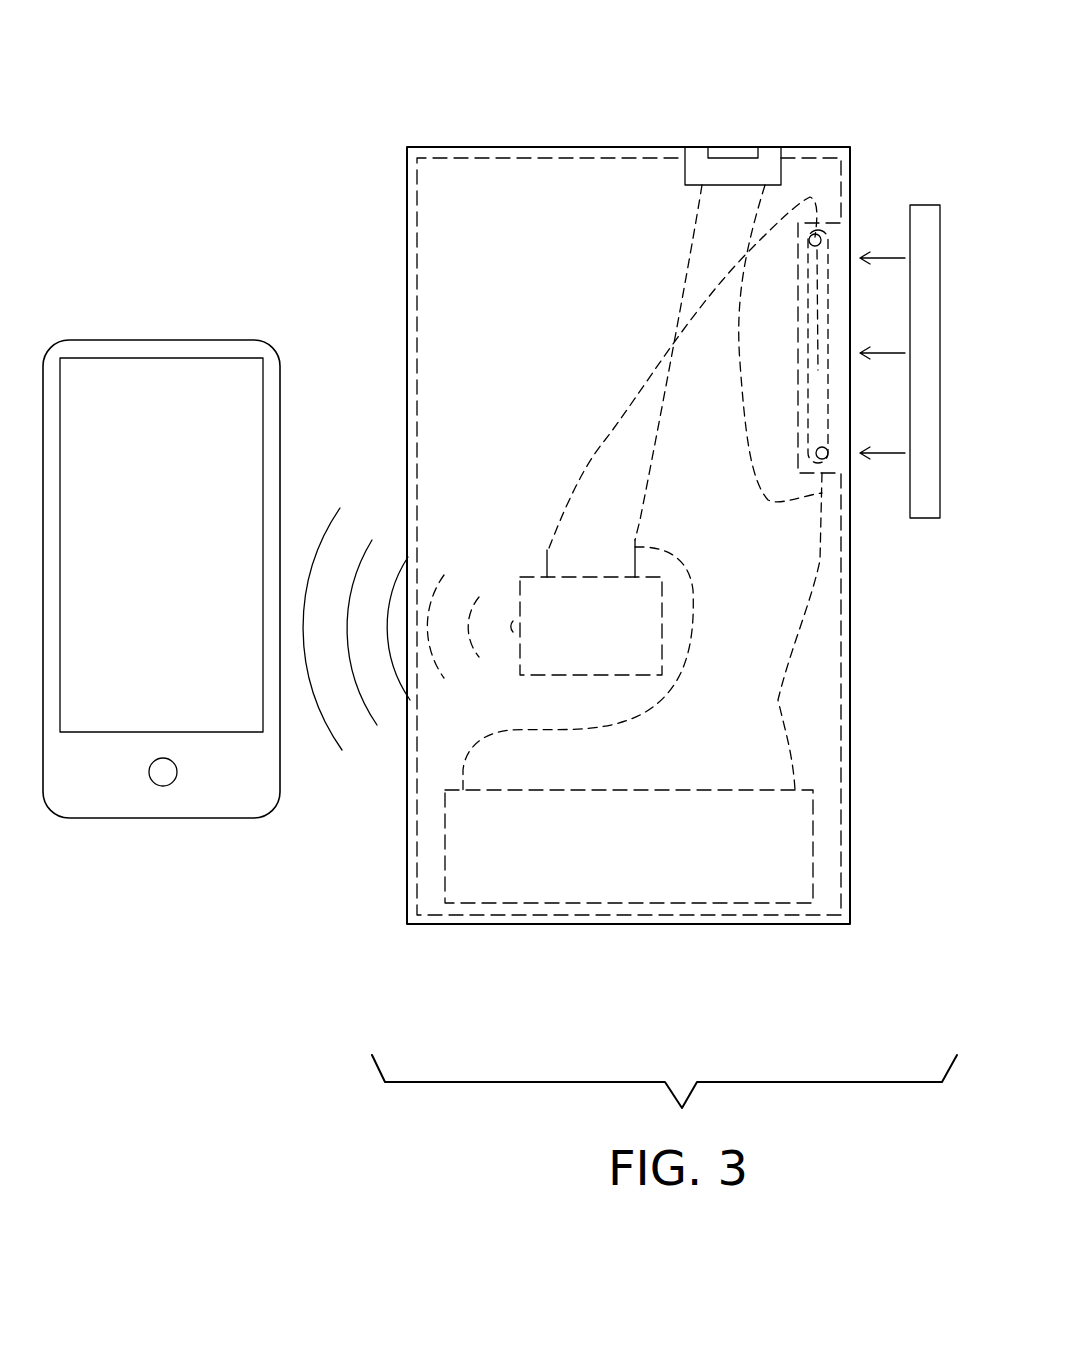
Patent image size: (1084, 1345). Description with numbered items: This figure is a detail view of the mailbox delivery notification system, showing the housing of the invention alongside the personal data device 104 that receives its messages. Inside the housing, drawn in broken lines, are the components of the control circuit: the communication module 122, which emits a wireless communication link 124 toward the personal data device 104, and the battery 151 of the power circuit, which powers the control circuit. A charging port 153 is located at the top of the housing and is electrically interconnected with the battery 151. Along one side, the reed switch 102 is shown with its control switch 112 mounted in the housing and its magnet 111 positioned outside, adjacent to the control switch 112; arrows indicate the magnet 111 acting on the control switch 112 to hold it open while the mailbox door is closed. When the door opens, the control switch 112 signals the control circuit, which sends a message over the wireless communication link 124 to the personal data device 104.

The reed switch 102 is at (960, 92).
The personal data device 104 is at (165, 397).
The magnet 111 is at (943, 203).
The control switch 112 is at (832, 253).
The communication module 122 is at (533, 613).
The wireless communication link 124 is at (358, 557).
The battery 151 is at (682, 817).
The charging port 153 is at (728, 155).